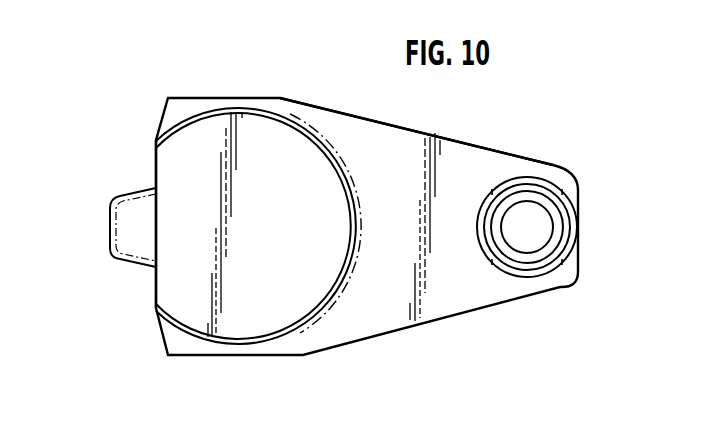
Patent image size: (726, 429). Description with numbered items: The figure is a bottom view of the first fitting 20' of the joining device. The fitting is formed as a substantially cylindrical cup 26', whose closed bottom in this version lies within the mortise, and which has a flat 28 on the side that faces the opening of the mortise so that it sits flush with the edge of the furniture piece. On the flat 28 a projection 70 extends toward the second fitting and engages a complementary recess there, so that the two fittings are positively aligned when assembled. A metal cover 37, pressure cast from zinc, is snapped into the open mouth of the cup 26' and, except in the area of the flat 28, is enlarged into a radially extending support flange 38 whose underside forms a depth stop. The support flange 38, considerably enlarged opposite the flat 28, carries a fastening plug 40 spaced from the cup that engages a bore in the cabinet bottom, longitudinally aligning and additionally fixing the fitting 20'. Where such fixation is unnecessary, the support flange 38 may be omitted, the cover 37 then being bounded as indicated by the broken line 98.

The first fitting 20' is at (367, 236).
The cup 26' is at (282, 241).
The flat 28 is at (155, 163).
The cover 37 is at (485, 144).
The support flange 38 is at (412, 231).
The fastening plug 40 is at (558, 215).
The projection 70 is at (120, 238).
The broken line 98 is at (340, 150).